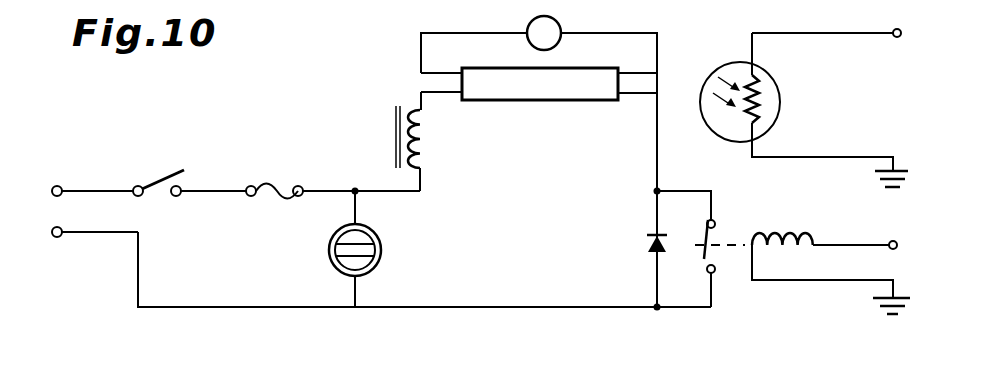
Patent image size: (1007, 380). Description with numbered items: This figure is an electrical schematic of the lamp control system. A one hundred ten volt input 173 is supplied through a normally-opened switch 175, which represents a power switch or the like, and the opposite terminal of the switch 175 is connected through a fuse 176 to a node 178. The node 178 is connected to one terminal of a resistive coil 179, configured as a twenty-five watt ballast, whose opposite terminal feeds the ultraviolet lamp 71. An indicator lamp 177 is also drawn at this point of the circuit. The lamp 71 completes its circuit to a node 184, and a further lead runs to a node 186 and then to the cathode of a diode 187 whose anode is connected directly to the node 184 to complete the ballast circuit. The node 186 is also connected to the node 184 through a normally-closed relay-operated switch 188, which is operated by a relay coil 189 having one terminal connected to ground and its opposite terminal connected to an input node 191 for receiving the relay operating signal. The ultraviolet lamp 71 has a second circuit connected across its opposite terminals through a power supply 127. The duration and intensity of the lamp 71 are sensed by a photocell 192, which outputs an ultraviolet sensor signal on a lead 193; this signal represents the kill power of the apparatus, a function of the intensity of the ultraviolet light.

The ultraviolet lamp 71 is at (529, 113).
The power supply 127 is at (561, 28).
The 110 volt input 173 is at (38, 229).
The normally-opened switch 175 is at (170, 176).
The fuse 176 is at (276, 188).
The indicator lamp 177 is at (378, 278).
The node 178 is at (355, 189).
The resistive coil 179 is at (408, 100).
The node 184 is at (655, 193).
The node 186 is at (659, 310).
The diode 187 is at (648, 246).
The normally-closed relay-operated switch 188 is at (704, 258).
The relay coil 189 is at (780, 233).
The input node 191 is at (897, 241).
The photocell 192 is at (780, 88).
The lead 193 is at (895, 40).